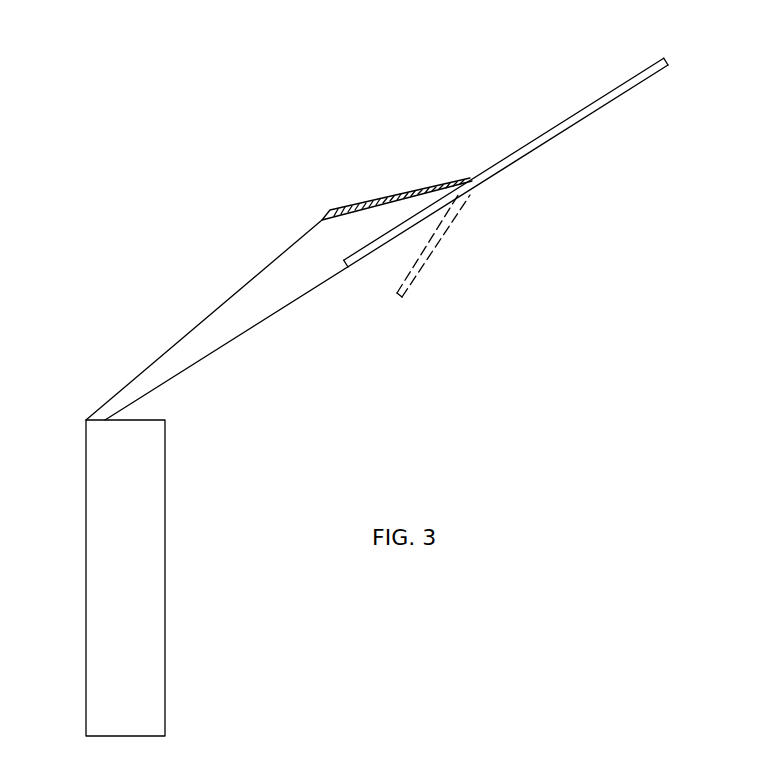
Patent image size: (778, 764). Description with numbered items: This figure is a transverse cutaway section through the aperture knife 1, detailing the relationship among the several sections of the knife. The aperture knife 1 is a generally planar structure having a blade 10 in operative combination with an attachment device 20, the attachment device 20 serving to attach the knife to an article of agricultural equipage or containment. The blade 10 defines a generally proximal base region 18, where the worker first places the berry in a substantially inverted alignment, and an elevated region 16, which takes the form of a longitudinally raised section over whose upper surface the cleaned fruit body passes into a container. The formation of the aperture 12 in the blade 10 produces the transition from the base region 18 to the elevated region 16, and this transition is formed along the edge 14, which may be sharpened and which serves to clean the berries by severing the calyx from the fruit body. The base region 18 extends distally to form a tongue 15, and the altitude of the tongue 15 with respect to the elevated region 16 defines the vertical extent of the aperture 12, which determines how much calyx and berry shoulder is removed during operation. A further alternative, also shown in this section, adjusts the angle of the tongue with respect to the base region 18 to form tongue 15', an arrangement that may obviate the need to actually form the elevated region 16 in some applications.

The aperture knife 1 is at (583, 66).
The blade 10 is at (538, 139).
The aperture 12 is at (342, 236).
The edge 14 is at (381, 208).
The tongue 15 is at (386, 242).
The tongue 15' is at (449, 244).
The elevated region 16 is at (260, 293).
The base region 18 is at (638, 78).
The attachment device 20 is at (86, 581).